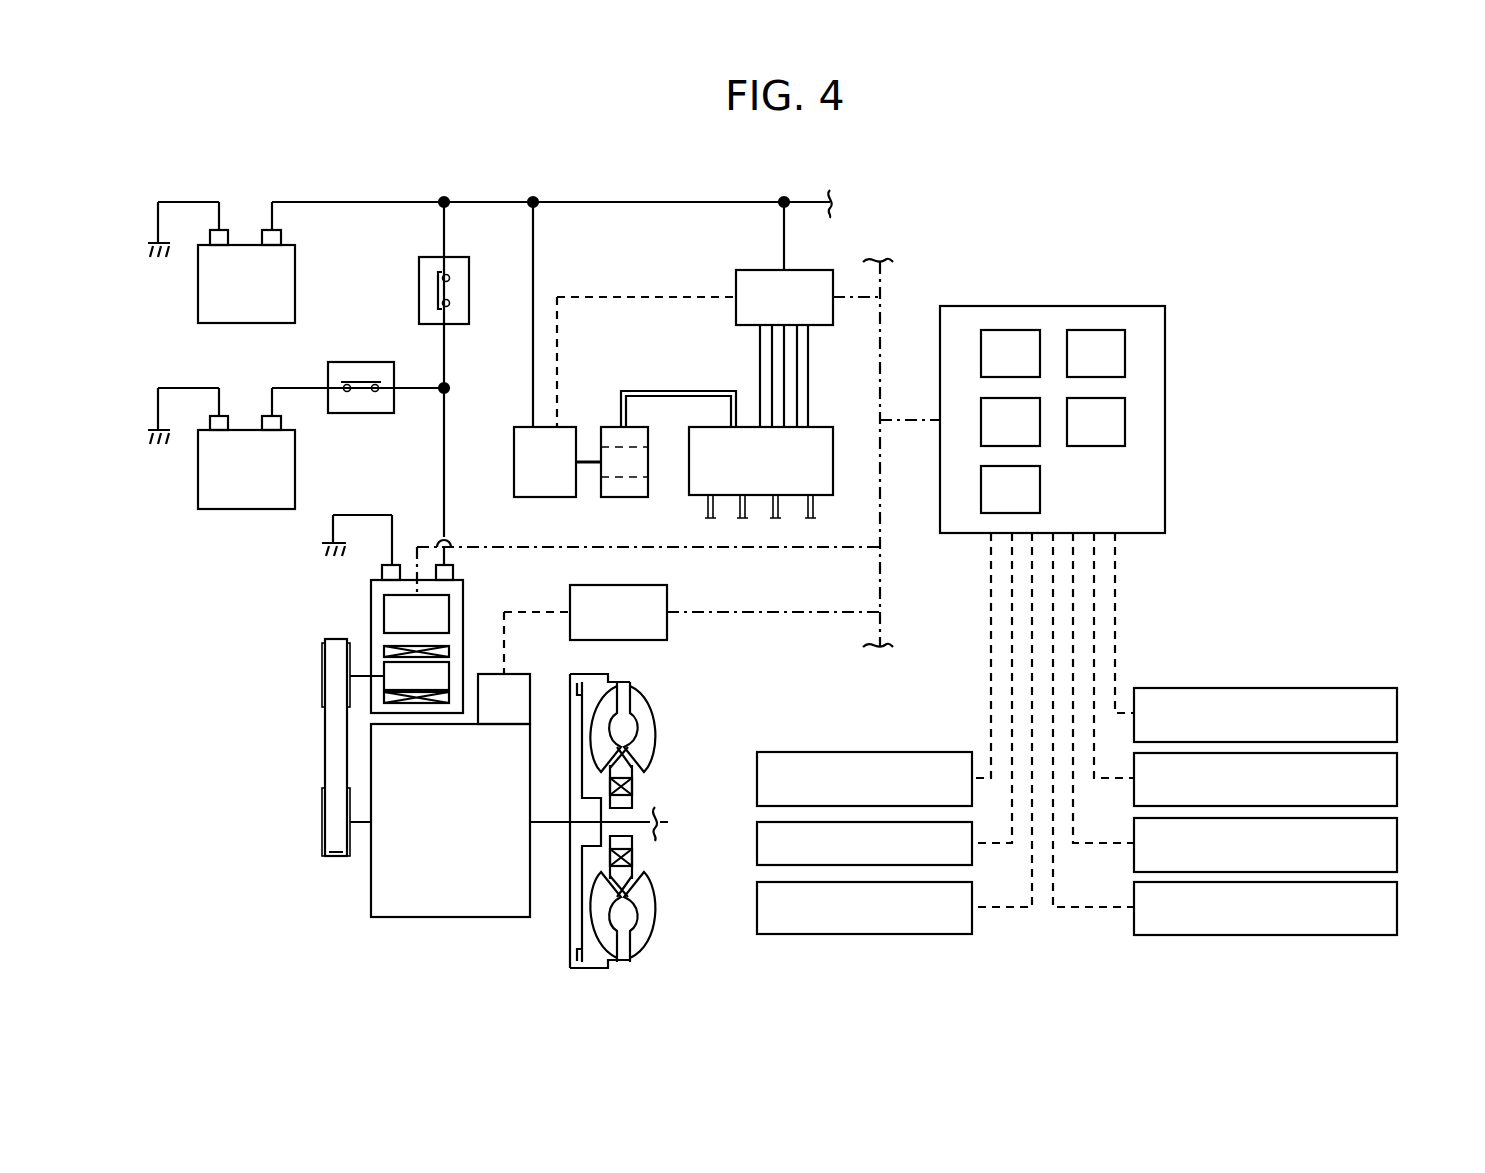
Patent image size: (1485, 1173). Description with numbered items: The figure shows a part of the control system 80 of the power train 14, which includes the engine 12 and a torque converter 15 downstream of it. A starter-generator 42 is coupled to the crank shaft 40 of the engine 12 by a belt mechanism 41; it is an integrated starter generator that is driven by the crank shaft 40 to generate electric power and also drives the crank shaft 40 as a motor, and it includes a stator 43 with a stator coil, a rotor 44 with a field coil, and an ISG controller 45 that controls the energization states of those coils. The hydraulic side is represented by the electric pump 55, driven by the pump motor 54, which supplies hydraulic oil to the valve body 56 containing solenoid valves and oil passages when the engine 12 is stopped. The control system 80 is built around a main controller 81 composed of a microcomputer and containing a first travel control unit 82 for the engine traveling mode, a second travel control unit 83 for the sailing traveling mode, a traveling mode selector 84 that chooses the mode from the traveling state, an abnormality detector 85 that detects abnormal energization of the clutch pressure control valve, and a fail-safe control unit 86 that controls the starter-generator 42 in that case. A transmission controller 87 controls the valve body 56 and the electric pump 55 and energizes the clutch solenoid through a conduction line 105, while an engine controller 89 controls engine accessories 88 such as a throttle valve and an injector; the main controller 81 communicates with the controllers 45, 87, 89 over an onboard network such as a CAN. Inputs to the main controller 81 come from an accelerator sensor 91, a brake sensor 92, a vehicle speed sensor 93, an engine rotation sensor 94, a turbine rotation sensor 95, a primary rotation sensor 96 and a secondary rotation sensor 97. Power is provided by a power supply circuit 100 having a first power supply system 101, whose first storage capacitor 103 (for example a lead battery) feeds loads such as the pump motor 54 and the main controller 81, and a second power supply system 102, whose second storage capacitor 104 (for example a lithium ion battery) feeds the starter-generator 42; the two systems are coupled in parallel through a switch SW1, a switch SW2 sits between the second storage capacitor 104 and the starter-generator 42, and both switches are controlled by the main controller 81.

The engine 12 is at (371, 889).
The power train 14 is at (330, 930).
The torque converter 15 is at (660, 712).
The crank shaft 40 is at (363, 822).
The belt mechanism 41 is at (313, 682).
The starter-generator 42 is at (365, 592).
The stator 43 is at (449, 670).
The rotor 44 is at (415, 700).
The ISG controller 45 is at (384, 607).
The pump motor 54 is at (520, 427).
The electric pump 55 is at (606, 427).
The valve body 56 is at (825, 427).
The control system 80 is at (1180, 245).
The main controller 81 is at (1168, 360).
The first travel control unit 82 is at (1027, 369).
The second travel control unit 83 is at (1027, 437).
The traveling mode selector 84 is at (1027, 505).
The abnormality detector 85 is at (1113, 369).
The fail-safe control unit 86 is at (1113, 437).
The transmission controller 87 is at (742, 270).
The engine accessories 88 is at (525, 674).
The engine controller 89 is at (667, 598).
The accelerator sensor 91 is at (757, 772).
The brake sensor 92 is at (757, 837).
The vehicle speed sensor 93 is at (757, 902).
The engine rotation sensor 94 is at (1398, 712).
The turbine rotation sensor 95 is at (1398, 777).
The primary rotation sensor 96 is at (1398, 842).
The secondary rotation sensor 97 is at (1398, 907).
The power supply circuit 100 is at (383, 180).
The first power supply system 101 is at (235, 197).
The second power supply system 102 is at (235, 385).
The first storage capacitor 103 is at (197, 292).
The second storage capacitor 104 is at (197, 480).
The conduction line 105 is at (760, 344).
The switch SW1 is at (419, 272).
The switch SW2 is at (347, 362).